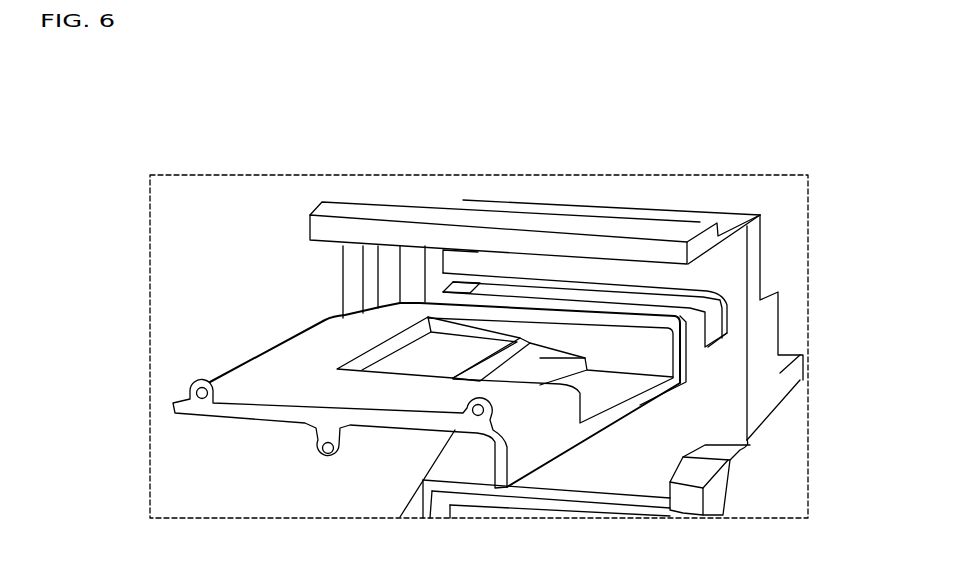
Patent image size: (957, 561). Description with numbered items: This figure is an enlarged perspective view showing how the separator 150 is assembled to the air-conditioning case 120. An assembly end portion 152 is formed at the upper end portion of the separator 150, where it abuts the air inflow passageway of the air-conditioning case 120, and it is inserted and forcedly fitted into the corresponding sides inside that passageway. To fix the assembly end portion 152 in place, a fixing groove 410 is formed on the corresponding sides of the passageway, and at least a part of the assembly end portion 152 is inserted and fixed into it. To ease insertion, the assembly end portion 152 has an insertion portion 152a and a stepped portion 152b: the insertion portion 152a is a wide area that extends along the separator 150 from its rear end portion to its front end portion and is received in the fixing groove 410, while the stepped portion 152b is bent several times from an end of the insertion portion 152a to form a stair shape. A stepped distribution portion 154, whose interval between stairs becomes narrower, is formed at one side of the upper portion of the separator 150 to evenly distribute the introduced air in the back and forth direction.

The air-conditioning case 120 is at (770, 323).
The separator 150 is at (270, 388).
The assembly end portion 152 is at (417, 191).
The insertion portion 152a is at (477, 296).
The stepped portion 152b is at (380, 311).
The stepped distribution portion 154 is at (390, 360).
The fixing groove 410 is at (571, 284).